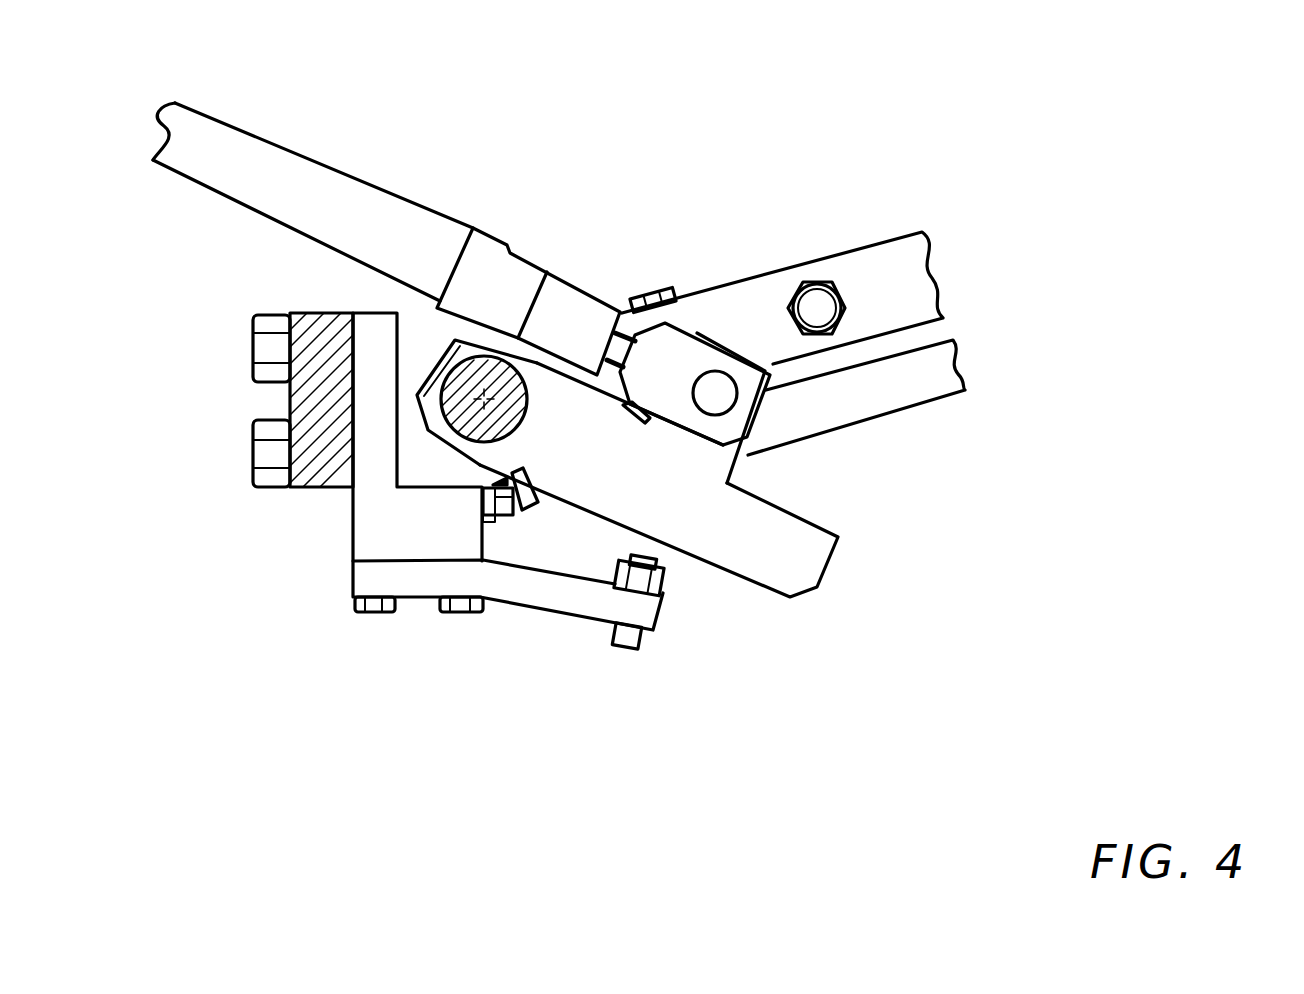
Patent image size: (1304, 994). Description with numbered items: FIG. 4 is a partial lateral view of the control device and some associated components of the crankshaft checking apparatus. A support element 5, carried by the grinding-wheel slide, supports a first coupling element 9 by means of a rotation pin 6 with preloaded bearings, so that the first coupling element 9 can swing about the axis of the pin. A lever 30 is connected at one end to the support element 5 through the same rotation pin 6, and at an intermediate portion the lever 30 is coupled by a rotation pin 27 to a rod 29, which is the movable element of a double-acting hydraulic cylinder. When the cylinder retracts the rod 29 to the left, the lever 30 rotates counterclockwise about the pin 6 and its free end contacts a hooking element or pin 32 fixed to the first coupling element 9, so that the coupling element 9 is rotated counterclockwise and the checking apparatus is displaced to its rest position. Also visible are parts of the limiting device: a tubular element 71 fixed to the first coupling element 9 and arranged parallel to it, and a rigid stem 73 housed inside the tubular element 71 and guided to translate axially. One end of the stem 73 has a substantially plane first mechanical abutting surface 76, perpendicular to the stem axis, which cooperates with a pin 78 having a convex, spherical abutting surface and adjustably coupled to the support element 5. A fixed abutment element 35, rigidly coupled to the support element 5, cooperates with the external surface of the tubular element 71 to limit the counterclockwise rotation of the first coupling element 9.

The rod 29 is at (325, 200).
The rotation pin 6 is at (443, 367).
The first coupling element 9 is at (737, 305).
The hooking element 32 is at (820, 303).
The tubular element 71 is at (893, 390).
The rotation pin 27 is at (718, 400).
The lever 30 is at (767, 550).
The support element 5 is at (373, 487).
The first mechanical abutting surface 76 is at (480, 488).
The pin 78 is at (505, 517).
The stem 73 is at (545, 493).
The fixed abutment element 35 is at (653, 563).